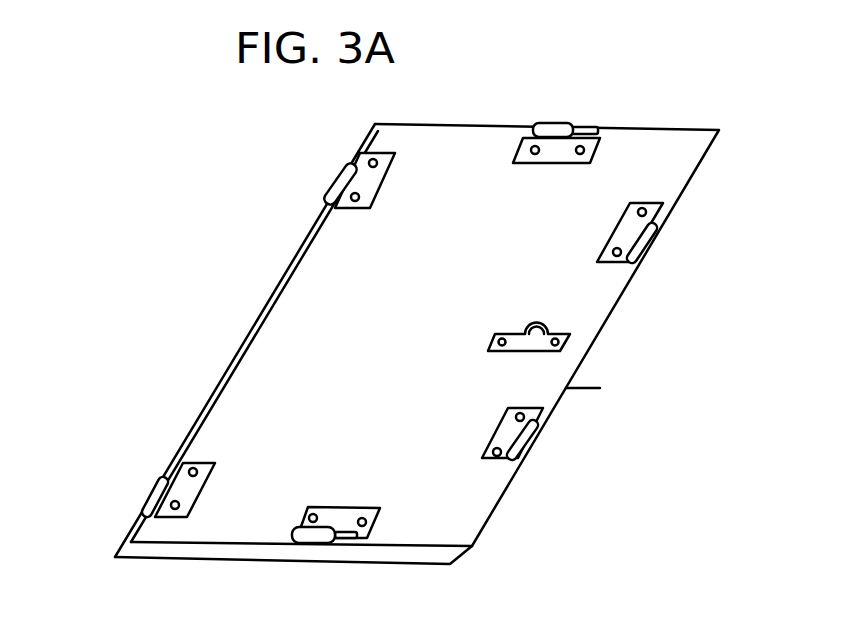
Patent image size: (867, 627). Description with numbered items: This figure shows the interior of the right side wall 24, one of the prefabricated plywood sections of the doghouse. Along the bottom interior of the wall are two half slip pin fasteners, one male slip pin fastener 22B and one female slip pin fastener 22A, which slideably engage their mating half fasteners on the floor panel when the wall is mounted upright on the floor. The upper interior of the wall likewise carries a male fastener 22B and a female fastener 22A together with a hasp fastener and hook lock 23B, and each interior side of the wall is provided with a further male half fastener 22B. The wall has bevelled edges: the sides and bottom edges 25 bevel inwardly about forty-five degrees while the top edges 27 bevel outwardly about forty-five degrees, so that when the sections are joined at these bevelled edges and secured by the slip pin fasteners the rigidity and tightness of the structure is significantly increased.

The right side wall 24 is at (667, 130).
The sides and bottom edges 25 is at (440, 123).
The female slip pin fastener 22A is at (648, 245).
The male slip pin fastener 22B is at (338, 182).
The hasp fastener and hook lock 23B is at (572, 335).
The top edges 27 is at (590, 388).